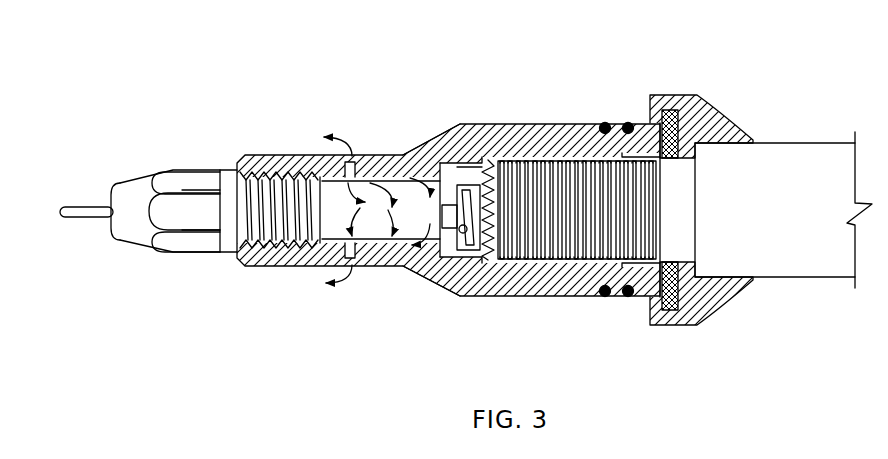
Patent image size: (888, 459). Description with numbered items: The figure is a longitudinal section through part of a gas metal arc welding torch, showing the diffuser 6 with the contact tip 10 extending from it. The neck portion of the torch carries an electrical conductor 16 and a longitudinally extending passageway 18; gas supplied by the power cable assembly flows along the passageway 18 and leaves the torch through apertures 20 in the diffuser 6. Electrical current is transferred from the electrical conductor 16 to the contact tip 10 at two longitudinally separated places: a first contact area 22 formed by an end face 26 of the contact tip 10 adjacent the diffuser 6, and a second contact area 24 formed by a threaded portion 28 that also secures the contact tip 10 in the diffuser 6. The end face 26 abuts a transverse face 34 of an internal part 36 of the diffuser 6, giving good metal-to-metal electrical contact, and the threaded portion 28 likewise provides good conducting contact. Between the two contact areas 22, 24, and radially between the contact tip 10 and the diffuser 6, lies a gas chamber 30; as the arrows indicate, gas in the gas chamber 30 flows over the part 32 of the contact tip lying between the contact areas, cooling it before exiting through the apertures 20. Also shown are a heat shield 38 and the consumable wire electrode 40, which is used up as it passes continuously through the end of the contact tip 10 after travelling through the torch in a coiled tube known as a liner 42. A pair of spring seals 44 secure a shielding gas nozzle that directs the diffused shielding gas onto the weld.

The diffuser 6 is at (532, 300).
The contact tip 10 is at (181, 258).
The electrical conductor 16 is at (689, 265).
The longitudinally extending passageway 18 is at (488, 180).
The apertures 20 is at (352, 177).
The first contact area 22 is at (425, 160).
The second contact area 24 is at (273, 252).
The end face 26 is at (440, 207).
The threaded portion 28 is at (292, 172).
The gas chamber 30 is at (378, 266).
The part of the contact tip 32 is at (384, 237).
The transverse face 34 is at (458, 170).
The internal part 36 is at (448, 252).
The heat shield 38 is at (715, 118).
The consumable wire electrode 40 is at (82, 217).
The liner 42 is at (474, 235).
The spring seals 44 is at (627, 297).